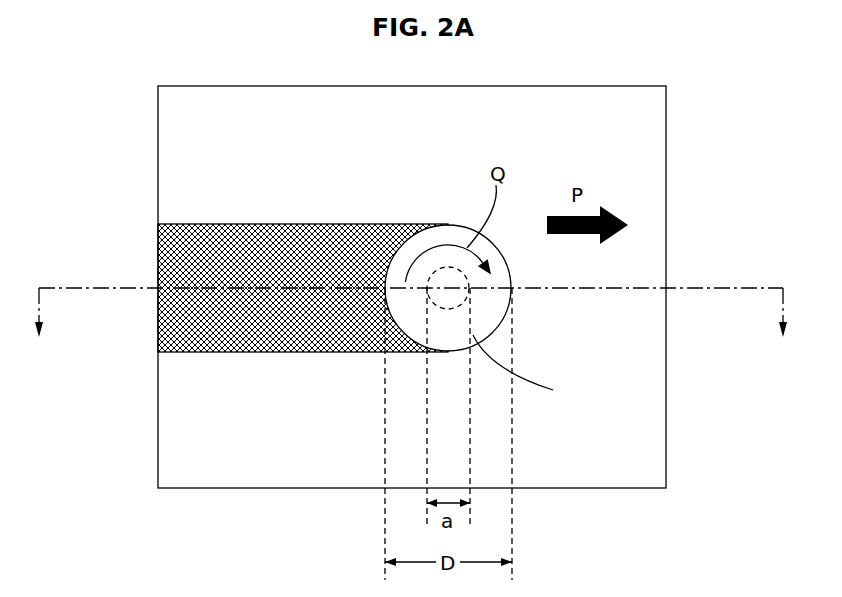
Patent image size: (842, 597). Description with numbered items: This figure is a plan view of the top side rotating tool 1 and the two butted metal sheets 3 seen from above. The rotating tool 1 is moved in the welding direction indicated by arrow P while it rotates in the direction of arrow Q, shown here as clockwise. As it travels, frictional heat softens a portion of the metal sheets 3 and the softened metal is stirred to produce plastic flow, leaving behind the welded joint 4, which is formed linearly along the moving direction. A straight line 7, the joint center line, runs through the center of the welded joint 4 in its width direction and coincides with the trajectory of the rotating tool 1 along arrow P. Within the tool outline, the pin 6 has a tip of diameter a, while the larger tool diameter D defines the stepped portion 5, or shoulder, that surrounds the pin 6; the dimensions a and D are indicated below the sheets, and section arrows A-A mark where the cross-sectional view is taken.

The rotating tool 1 is at (508, 262).
The metal sheets 3 is at (657, 143).
The welded joint 4 is at (232, 237).
The stepped portion 5 is at (519, 372).
The pin 6 is at (457, 295).
The straight line 7 is at (97, 286).